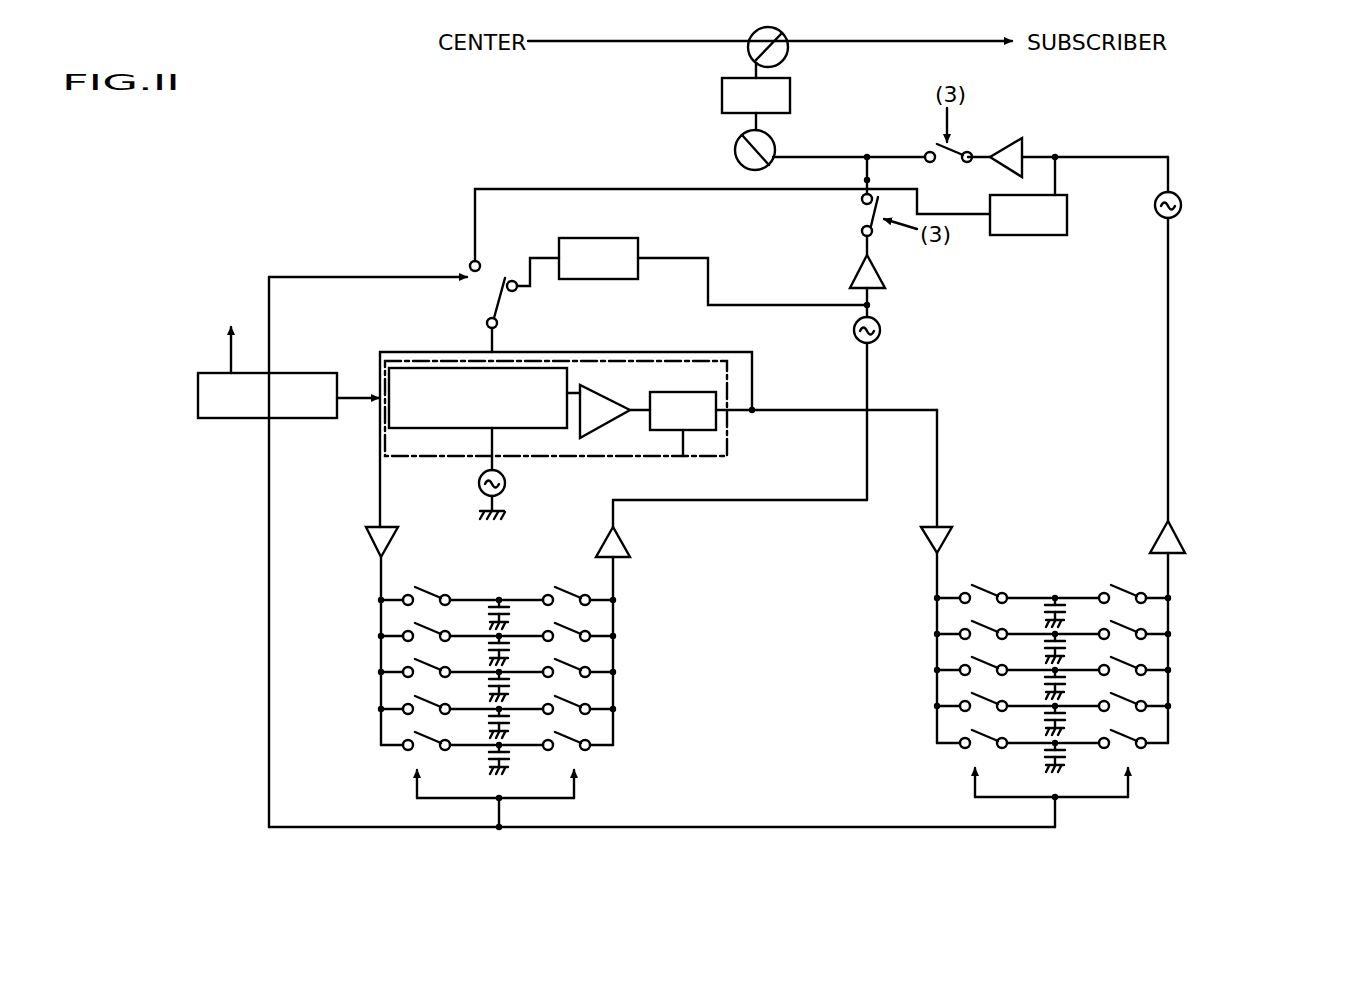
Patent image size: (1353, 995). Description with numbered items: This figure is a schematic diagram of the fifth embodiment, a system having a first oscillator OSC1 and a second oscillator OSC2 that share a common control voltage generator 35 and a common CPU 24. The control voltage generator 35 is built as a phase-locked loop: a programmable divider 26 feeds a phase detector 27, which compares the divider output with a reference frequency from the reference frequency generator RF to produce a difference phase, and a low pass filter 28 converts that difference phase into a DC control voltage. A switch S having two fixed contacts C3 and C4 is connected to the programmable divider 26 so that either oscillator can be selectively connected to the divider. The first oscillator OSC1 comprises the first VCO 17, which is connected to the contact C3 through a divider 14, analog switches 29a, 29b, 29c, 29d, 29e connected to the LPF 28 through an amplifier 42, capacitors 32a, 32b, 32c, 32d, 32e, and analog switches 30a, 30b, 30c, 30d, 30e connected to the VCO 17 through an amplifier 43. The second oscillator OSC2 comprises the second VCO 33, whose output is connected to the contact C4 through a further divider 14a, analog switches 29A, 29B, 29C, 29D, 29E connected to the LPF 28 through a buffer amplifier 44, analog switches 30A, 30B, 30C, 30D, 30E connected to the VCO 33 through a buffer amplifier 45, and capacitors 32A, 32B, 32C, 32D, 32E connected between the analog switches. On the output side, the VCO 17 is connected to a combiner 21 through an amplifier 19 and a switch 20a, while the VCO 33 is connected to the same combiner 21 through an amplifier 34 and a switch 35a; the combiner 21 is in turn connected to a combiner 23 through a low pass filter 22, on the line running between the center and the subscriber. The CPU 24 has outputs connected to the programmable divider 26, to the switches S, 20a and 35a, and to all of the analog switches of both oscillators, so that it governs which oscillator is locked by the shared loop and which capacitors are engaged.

The 1/N divider 14 is at (585, 238).
The 1/N divider 14a is at (1030, 235).
The first VCO 17 is at (880, 335).
The amplifier 19 is at (880, 266).
The switch 20a is at (862, 214).
The combiner 21 is at (735, 150).
The low pass filter 22 is at (790, 90).
The combiner 23 is at (752, 41).
The CPU 24 is at (230, 420).
The programmable divider 26 is at (438, 366).
The phase detector 27 is at (600, 387).
The low pass filter 28 is at (683, 458).
The second VCO 33 is at (1182, 205).
The amplifier 34 is at (1020, 140).
The control voltage generator 35 is at (727, 435).
The switch 35a is at (965, 147).
The amplifier 42 is at (366, 541).
The amplifier 43 is at (631, 541).
The buffer amplifier 44 is at (921, 542).
The buffer amplifier 45 is at (1152, 546).
The analog switch 29a is at (407, 593).
The analog switch 29b is at (407, 629).
The analog switch 29c is at (407, 665).
The analog switch 29d is at (407, 702).
The analog switch 29e is at (407, 738).
The analog switch 30a is at (614, 593).
The analog switch 30b is at (614, 629).
The analog switch 30c is at (614, 665).
The analog switch 30d is at (614, 702).
The analog switch 30e is at (614, 738).
The capacitor 32a is at (492, 597).
The capacitor 32b is at (490, 634).
The capacitor 32c is at (492, 683).
The capacitor 32d is at (492, 720).
The capacitor 32e is at (506, 753).
The analog switch 29A is at (964, 591).
The analog switch 29B is at (964, 627).
The analog switch 29C is at (964, 663).
The analog switch 29D is at (964, 699).
The analog switch 29E is at (964, 736).
The analog switch 30A is at (1170, 591).
The analog switch 30B is at (1170, 627).
The analog switch 30C is at (1170, 663).
The analog switch 30D is at (1170, 699).
The analog switch 30E is at (1170, 736).
The capacitor 32A is at (1048, 595).
The capacitor 32B is at (1045, 633).
The capacitor 32C is at (1048, 682).
The capacitor 32D is at (1048, 716).
The capacitor 32E is at (1060, 748).
The fixed contact C3 is at (527, 268).
The fixed contact C4 is at (455, 258).
The switch S is at (508, 303).
The reference frequency generator RF is at (478, 484).
The first oscillator OSC1 is at (296, 477).
The second oscillator OSC2 is at (1137, 343).